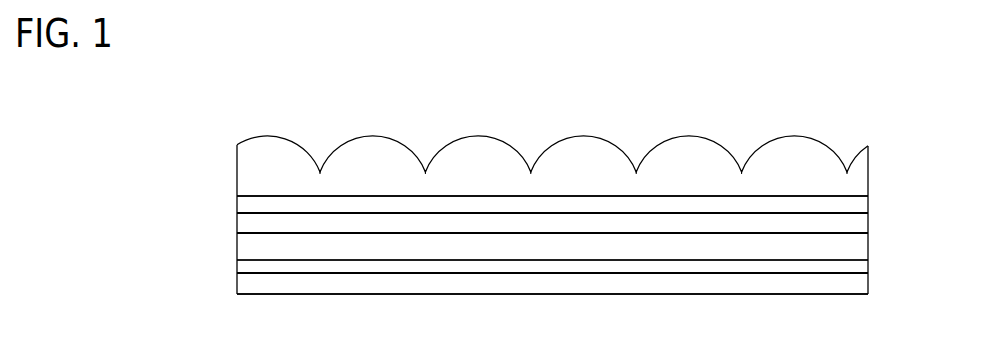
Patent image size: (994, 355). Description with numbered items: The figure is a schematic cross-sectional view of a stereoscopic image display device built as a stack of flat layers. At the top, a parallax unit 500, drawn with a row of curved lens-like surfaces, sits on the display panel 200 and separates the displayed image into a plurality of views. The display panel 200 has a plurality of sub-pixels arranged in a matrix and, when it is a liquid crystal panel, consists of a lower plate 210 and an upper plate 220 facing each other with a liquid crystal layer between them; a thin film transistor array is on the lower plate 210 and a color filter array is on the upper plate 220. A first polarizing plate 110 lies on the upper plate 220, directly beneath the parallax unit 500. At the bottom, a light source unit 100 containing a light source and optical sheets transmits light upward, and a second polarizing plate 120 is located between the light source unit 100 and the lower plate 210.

The parallax unit 500 is at (247, 166).
The first polarizing plate 110 is at (862, 207).
The display panel 200 is at (172, 213).
The upper plate 220 is at (247, 224).
The lower plate 210 is at (247, 246).
The second polarizing plate 120 is at (862, 268).
The light source unit 100 is at (247, 283).